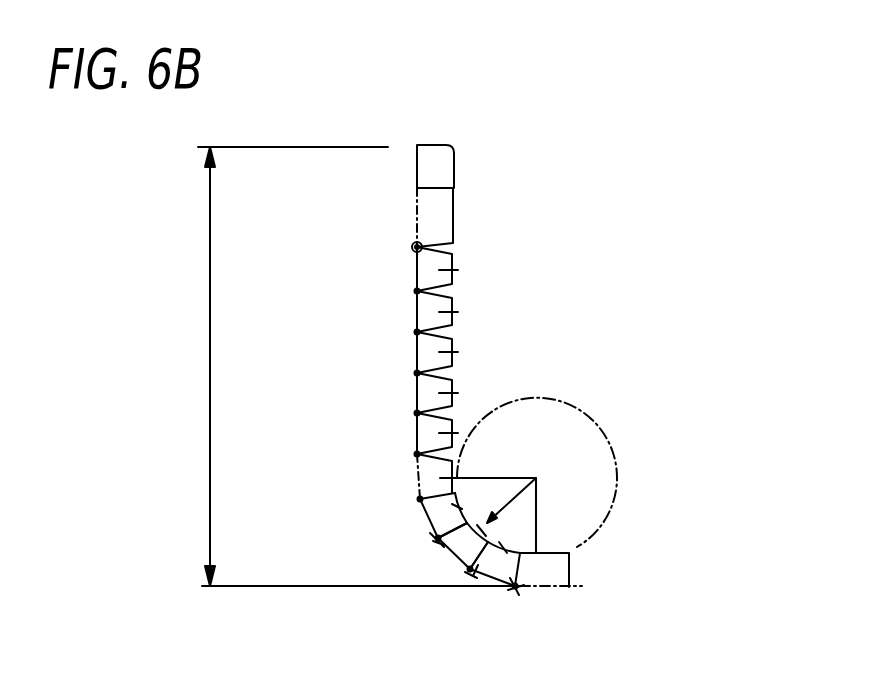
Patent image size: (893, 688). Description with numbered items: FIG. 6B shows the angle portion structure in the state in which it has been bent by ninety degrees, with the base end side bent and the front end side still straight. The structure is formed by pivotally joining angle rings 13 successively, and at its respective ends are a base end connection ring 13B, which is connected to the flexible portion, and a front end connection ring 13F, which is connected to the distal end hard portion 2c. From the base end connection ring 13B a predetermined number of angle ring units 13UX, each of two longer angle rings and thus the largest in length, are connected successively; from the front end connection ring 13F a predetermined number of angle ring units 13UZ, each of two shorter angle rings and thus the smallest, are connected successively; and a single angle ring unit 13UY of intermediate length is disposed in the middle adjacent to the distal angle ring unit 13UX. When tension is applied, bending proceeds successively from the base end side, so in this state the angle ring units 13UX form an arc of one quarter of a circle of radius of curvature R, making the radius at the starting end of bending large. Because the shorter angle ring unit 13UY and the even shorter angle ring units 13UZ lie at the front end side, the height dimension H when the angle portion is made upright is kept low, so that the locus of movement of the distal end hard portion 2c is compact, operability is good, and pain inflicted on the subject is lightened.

The distal end hard portion 2c is at (432, 170).
The front end connection ring 13F is at (437, 197).
The angle ring units (shortest) 13UZ is at (452, 283).
The angle ring unit (intermediate) 13UY is at (418, 443).
The angle ring units (third angle units) 13UX is at (438, 538).
The angle ring 13 is at (502, 575).
The base end connection ring 13B is at (558, 567).
The radius of curvature R is at (515, 497).
The height dimension H is at (288, 366).